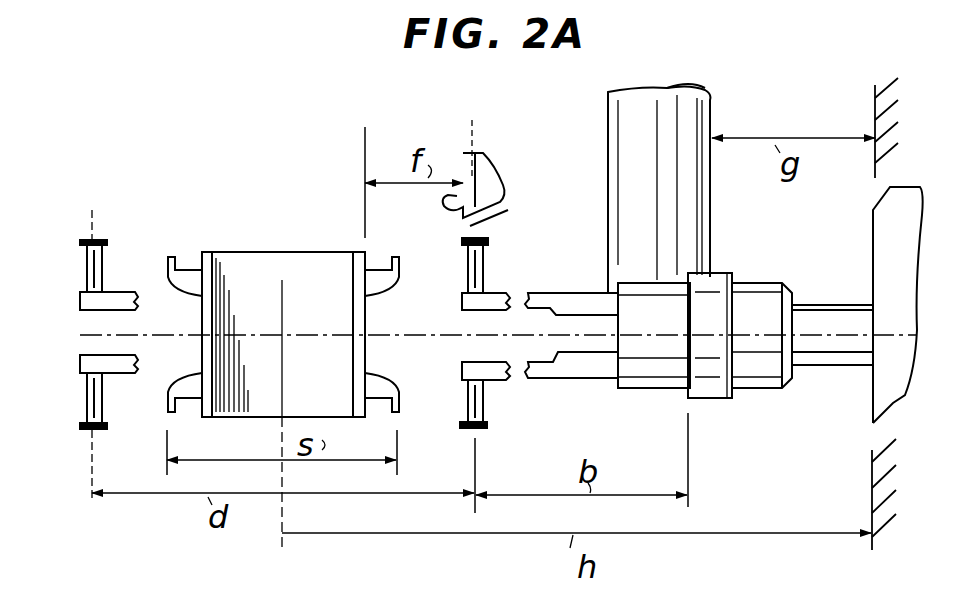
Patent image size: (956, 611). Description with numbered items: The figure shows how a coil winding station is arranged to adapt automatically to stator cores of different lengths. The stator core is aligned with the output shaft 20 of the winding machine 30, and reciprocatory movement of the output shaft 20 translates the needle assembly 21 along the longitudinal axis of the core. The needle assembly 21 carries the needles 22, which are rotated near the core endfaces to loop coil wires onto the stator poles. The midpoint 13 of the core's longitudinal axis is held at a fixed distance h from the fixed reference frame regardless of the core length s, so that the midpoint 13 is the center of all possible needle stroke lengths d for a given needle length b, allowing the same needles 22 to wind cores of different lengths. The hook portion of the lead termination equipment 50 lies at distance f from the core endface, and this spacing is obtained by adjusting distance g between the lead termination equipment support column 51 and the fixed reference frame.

The midpoint 13 is at (282, 335).
The output shaft 20 is at (833, 307).
The needle assembly 21 is at (755, 405).
The needles 22 is at (566, 380).
The winding machine 30 is at (905, 253).
The lead termination equipment 50 is at (485, 157).
The lead termination equipment support column 51 is at (622, 123).